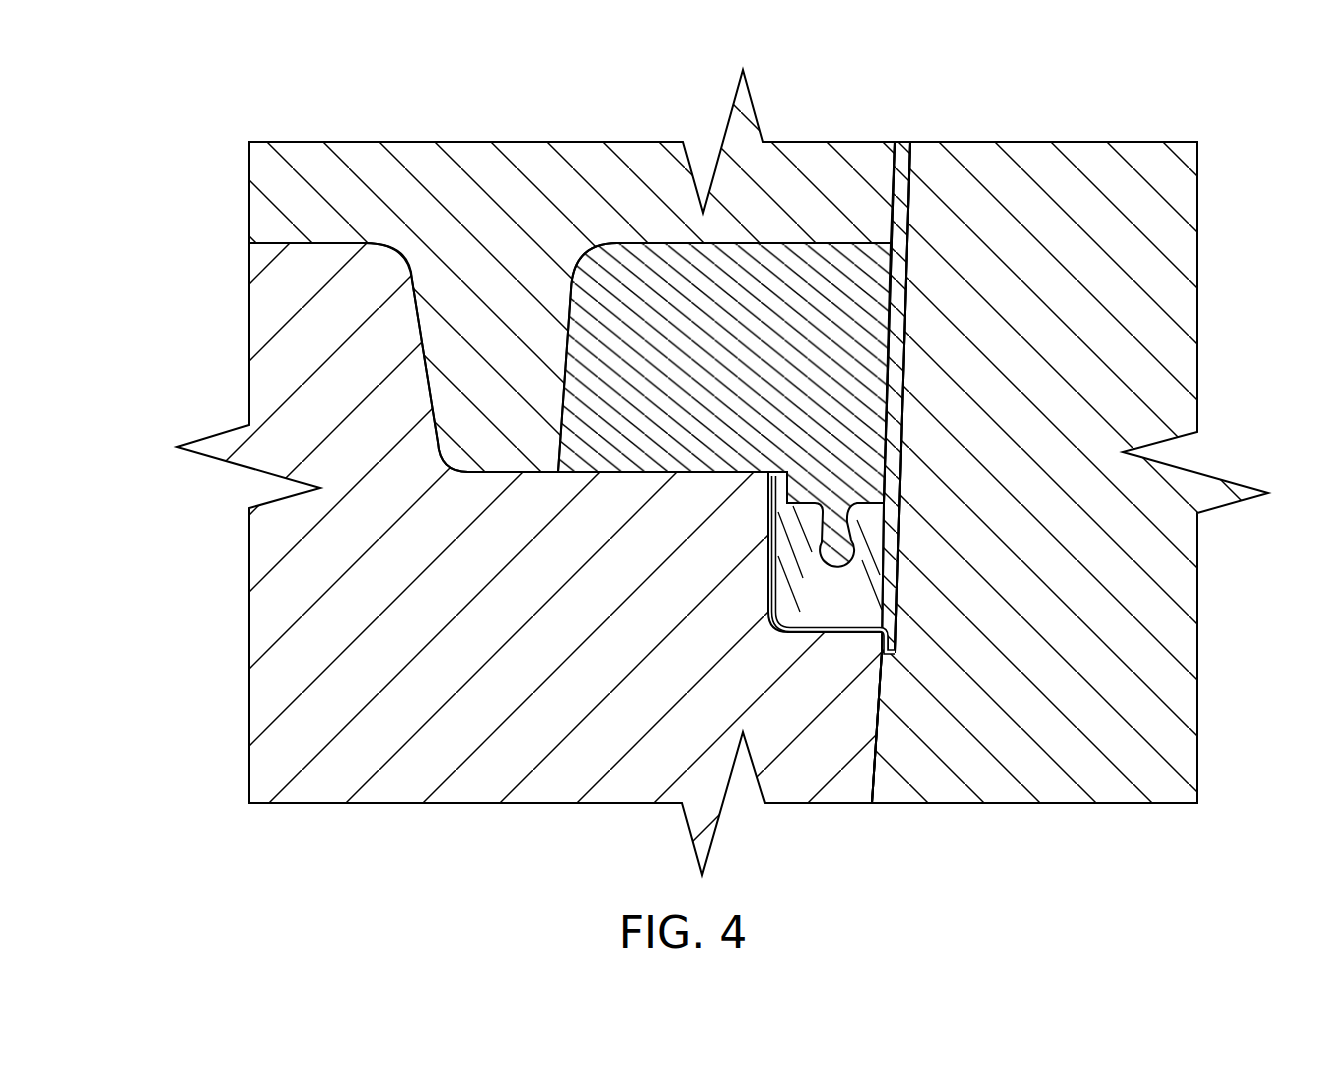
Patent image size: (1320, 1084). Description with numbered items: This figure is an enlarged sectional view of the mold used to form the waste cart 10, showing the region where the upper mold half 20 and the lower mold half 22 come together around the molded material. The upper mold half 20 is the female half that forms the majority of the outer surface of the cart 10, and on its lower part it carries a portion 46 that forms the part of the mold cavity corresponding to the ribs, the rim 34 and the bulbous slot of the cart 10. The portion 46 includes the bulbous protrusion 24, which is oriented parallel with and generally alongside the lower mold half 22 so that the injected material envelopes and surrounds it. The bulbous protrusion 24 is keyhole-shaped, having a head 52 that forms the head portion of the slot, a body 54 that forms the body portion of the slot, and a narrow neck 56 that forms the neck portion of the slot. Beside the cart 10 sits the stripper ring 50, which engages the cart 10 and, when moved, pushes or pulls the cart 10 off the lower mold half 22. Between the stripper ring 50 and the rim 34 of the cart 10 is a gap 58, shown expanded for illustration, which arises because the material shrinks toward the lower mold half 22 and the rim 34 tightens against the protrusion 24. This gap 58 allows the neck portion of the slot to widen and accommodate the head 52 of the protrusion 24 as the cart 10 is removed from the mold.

The waste cart 10 is at (908, 217).
The upper mold half 20 is at (449, 142).
The lower mold half 22 is at (1197, 279).
The bulbous protrusion 24 is at (897, 620).
The rim 34 is at (792, 500).
The portion 46 is at (600, 243).
The stripper ring 50 is at (249, 321).
The head 52 is at (824, 575).
The body 54 is at (771, 530).
The narrow neck 56 is at (771, 615).
The gap 58 is at (768, 474).